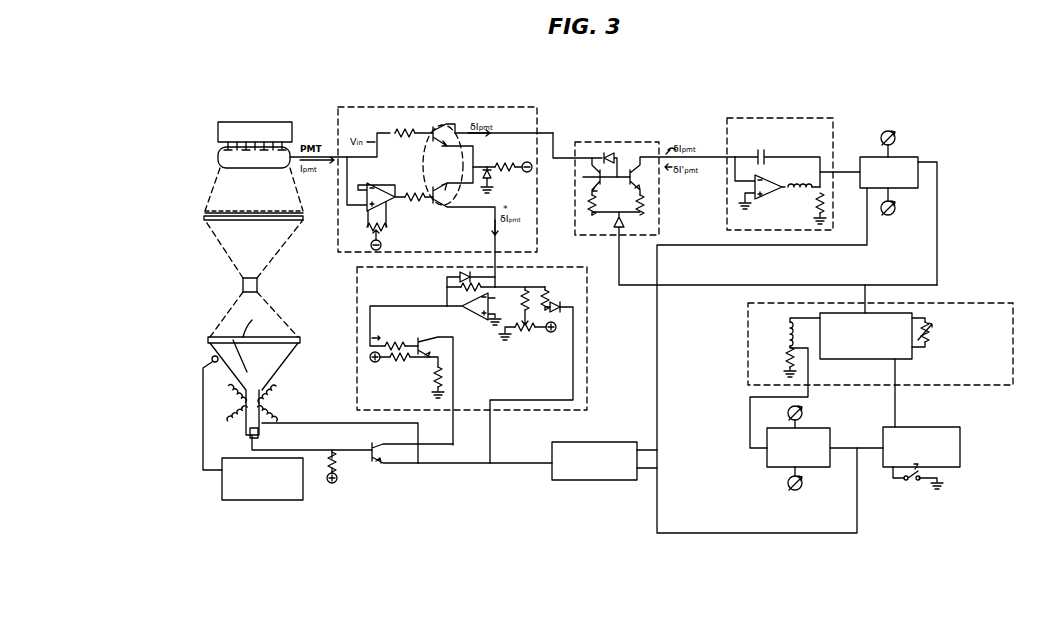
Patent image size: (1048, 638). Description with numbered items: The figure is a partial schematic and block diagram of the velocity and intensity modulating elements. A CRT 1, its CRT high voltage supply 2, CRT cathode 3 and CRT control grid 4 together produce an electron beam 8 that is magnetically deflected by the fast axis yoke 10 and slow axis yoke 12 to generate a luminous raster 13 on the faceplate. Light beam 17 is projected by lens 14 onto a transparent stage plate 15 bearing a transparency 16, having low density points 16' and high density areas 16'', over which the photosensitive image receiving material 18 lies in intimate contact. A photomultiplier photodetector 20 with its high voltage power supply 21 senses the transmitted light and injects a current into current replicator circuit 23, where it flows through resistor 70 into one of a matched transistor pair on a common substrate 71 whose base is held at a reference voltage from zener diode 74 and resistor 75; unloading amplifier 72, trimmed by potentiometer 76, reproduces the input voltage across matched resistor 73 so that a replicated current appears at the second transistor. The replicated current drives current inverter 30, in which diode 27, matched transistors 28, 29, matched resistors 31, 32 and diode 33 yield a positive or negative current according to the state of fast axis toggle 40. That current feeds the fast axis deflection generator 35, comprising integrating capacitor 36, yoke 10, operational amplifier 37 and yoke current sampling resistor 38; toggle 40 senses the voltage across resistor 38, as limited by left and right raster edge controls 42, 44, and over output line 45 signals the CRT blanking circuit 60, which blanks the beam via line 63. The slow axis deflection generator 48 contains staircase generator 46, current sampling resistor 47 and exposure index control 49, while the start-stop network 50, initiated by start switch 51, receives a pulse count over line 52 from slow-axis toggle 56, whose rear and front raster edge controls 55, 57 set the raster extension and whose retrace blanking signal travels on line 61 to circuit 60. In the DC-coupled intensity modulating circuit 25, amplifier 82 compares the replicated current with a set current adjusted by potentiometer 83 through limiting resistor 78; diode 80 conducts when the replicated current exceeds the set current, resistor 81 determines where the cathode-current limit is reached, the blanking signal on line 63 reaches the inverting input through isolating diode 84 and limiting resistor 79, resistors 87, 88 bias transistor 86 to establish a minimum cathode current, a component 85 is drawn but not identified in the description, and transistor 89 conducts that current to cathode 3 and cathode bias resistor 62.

The CRT 1 is at (300, 339).
The CRT high voltage supply 2 is at (266, 502).
The CRT cathode 3 is at (250, 446).
The CRT control grid 4 is at (264, 428).
The electron beam 8 is at (242, 350).
The fast axis deflection yoke 10 is at (790, 197).
The slow axis deflection yoke 12 is at (788, 325).
The luminous raster 13 is at (256, 325).
The lens 14 is at (258, 283).
The transparent stage plate 15 is at (191, 247).
The transparency 16 is at (326, 247).
The low density point 16' is at (254, 191).
The high density area 16'' is at (226, 189).
The light beam 17 is at (228, 258).
The photosensitive image receiving material 18 is at (303, 216).
The photodetector 20 is at (218, 152).
The high voltage power supply 21 is at (292, 126).
The current replicator circuit 23 is at (524, 107).
The DC-coupled intensity modulating circuit 25 is at (594, 346).
The diode 27 is at (614, 153).
The transistor 28 is at (583, 177).
The transistor 29 is at (640, 178).
The current inverter 30 is at (628, 142).
The resistor 31 is at (586, 205).
The resistor 32 is at (636, 205).
The diode 33 is at (624, 222).
The fast axis deflection generator 35 is at (833, 140).
The integrating capacitor 36 is at (762, 150).
The operational amplifier 37 is at (770, 175).
The yoke current sampling resistor 38 is at (815, 205).
The fast axis toggle 40 is at (807, 345).
The left raster edge control 42 is at (893, 132).
The right raster edge control 44 is at (896, 211).
The output line 45 is at (657, 405).
The staircase generator 46 is at (848, 359).
The current sampling resistor 47 is at (786, 358).
The slow axis deflection generator 48 is at (962, 303).
The exposure index control 49 is at (930, 344).
The start-stop network 50 is at (960, 432).
The start switch 51 is at (938, 480).
The line 52 is at (895, 380).
The rear raster edge control 55 is at (788, 415).
The slow-axis toggle 56 is at (829, 466).
The front raster edge control 57 is at (788, 486).
The CRT blanking circuit 60 is at (597, 480).
The line 61 is at (657, 520).
The cathode bias resistor 62 is at (337, 470).
The line 63 is at (523, 463).
The resistor 70 is at (402, 131).
The common substrate 71 is at (452, 128).
The unloading amplifier 72 is at (386, 207).
The resistor 73 is at (418, 203).
The zener diode 74 is at (493, 180).
The resistor 75 is at (506, 162).
The potentiometer 76 is at (382, 238).
The limiting resistor 78 is at (528, 290).
The limiting resistor 79 is at (548, 290).
The diode 80 is at (456, 275).
The resistor 81 is at (458, 289).
The amplifier 82 is at (475, 320).
The potentiometer 83 is at (524, 340).
The isolating diode 84 is at (560, 300).
The resistor 85 is at (400, 340).
The transistor 86 is at (435, 340).
The resistor 87 is at (390, 360).
The resistor 88 is at (432, 380).
The transistor 89 is at (375, 443).